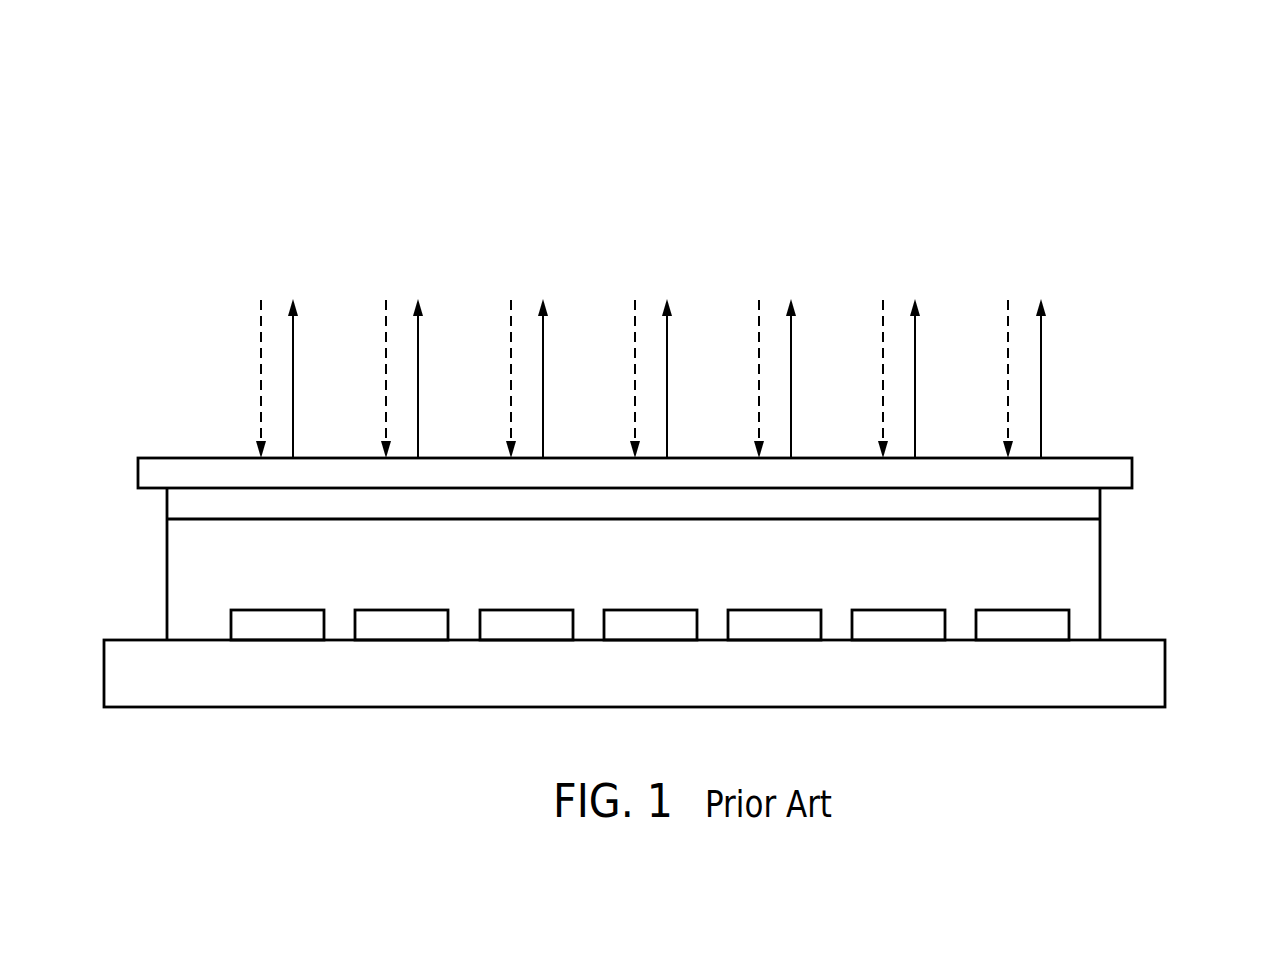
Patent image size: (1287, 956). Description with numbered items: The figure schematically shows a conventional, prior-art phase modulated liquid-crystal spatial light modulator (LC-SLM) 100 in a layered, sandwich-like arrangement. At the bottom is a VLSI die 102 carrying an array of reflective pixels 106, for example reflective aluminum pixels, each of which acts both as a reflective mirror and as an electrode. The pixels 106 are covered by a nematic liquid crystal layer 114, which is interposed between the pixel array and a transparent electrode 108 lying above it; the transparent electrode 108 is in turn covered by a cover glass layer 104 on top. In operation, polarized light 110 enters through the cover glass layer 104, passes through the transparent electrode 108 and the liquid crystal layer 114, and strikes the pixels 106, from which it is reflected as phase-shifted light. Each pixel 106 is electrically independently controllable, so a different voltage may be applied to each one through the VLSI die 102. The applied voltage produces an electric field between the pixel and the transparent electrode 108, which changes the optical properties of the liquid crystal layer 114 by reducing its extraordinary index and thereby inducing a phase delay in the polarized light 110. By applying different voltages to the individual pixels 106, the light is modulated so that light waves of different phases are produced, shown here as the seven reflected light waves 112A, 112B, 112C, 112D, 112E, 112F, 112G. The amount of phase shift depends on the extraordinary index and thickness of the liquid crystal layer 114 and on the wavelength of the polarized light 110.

The phase modulated liquid-crystal spatial light modulator 100 is at (933, 93).
The VLSI die 102 is at (1152, 677).
The cover glass layer 104 is at (1103, 468).
The reflective pixels 106 is at (262, 618).
The transparent electrode 108 is at (187, 500).
The polarized light 110 is at (260, 365).
The light wave 112A is at (293, 360).
The light wave 112B is at (418, 362).
The light wave 112C is at (543, 362).
The light wave 112D is at (667, 365).
The light wave 112E is at (791, 372).
The light wave 112F is at (915, 362).
The light wave 112G is at (1041, 382).
The nematic liquid crystal layer 114 is at (1077, 567).